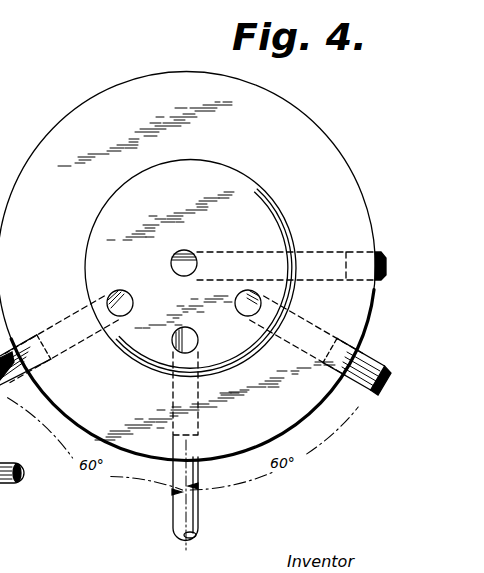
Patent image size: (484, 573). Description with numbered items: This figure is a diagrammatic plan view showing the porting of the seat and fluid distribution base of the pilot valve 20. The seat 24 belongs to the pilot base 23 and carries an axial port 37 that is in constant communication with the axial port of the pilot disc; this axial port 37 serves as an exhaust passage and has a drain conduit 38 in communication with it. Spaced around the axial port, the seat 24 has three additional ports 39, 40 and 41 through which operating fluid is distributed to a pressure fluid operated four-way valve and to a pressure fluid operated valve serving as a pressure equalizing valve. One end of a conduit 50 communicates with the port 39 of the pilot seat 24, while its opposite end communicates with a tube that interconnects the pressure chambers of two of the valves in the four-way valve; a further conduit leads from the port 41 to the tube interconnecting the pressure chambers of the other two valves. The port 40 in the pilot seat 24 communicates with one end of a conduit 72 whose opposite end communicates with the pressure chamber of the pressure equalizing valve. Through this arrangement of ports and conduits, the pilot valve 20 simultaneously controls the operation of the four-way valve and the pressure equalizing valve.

The pilot valve 20 is at (9, 508).
The pilot base 23 is at (337, 150).
The seat 24 is at (254, 191).
The axial port 37 is at (183, 247).
The drain conduit 38 is at (378, 252).
The port 39 is at (236, 303).
The port 40 is at (198, 338).
The port 41 is at (125, 292).
The conduit 50 is at (382, 369).
The conduit 72 is at (198, 508).